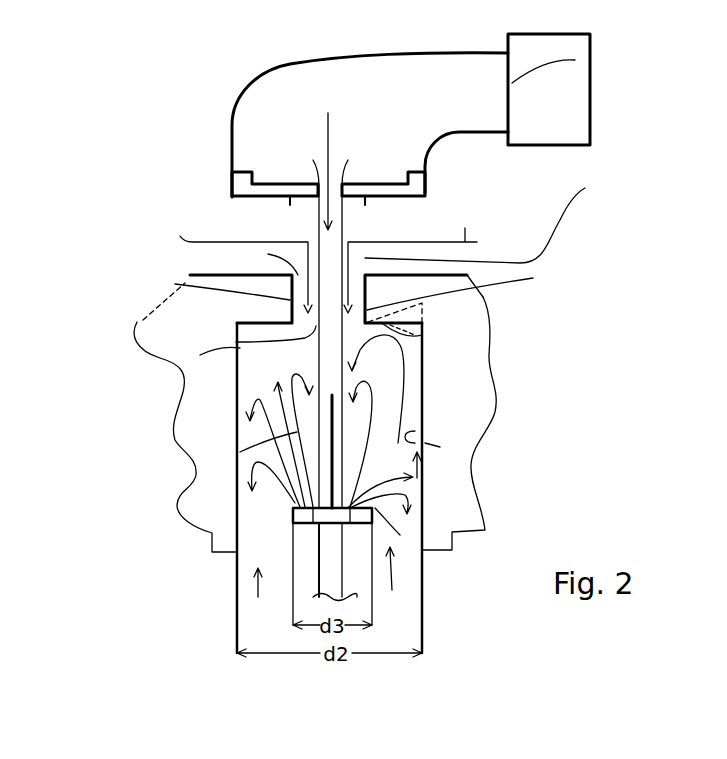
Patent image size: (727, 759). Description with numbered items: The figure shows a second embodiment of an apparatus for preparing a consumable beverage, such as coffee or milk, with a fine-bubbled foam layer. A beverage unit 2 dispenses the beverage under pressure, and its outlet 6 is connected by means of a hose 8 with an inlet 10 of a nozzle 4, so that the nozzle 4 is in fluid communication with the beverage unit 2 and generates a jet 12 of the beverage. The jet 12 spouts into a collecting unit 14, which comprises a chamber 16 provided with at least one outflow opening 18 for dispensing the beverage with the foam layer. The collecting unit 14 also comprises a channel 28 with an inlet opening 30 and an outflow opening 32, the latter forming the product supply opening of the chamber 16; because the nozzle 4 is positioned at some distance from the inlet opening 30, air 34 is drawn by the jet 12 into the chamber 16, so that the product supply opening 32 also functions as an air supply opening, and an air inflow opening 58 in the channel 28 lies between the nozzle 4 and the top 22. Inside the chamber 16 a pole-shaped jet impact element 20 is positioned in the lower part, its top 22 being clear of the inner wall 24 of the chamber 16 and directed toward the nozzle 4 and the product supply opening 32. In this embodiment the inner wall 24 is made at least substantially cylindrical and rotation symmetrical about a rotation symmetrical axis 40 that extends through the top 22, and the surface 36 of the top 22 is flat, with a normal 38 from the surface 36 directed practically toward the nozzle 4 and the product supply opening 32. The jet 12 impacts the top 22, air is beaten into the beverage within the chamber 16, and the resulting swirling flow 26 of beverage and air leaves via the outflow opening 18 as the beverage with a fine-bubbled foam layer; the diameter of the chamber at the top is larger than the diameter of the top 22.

The beverage unit 2 is at (572, 100).
The nozzle 4 is at (342, 186).
The outlet 6 is at (575, 60).
The hose 8 is at (307, 63).
The inlet 10 is at (319, 186).
The jet 12 is at (292, 213).
The collecting unit 14 is at (483, 297).
The chamber 16 is at (248, 374).
The outflow opening 18 is at (258, 590).
The jet impact element 20 is at (332, 580).
The top 22 is at (307, 525).
The inner wall 24 is at (236, 342).
The gas swirl flow 26 is at (238, 461).
The channel 28 is at (190, 277).
The inlet opening 30 is at (268, 254).
The outflow opening 32 is at (200, 355).
The air 34 is at (180, 236).
The surface 36 is at (400, 535).
The normal 38 is at (440, 447).
The rotation symmetrical axis 40 is at (400, 418).
The air inflow opening 58 is at (322, 243).